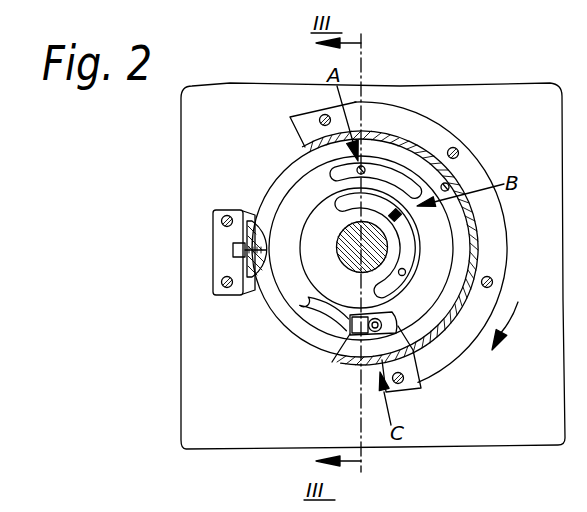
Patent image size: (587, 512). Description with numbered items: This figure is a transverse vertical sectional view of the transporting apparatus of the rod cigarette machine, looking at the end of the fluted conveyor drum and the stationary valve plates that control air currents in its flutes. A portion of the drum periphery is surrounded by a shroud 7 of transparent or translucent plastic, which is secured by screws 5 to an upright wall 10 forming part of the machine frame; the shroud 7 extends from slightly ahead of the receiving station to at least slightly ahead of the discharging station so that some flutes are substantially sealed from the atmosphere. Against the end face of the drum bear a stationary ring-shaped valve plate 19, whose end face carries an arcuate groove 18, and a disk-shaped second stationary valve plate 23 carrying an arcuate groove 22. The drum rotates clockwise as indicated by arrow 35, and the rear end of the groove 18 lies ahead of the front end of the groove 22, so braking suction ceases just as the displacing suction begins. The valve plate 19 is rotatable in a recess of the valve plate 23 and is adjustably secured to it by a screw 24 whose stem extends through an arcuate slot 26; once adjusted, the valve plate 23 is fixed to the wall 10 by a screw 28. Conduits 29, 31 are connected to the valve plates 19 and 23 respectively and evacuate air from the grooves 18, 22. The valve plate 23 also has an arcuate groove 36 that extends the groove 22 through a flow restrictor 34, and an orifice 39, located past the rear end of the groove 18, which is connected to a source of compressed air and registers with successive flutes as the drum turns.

The screws 5 is at (325, 120).
The shroud 7 is at (423, 140).
The upright wall 10 is at (227, 345).
The arcuate groove 18 is at (428, 178).
The ring-shaped valve plate 19 is at (297, 204).
The arcuate groove 22 is at (416, 246).
The disk-shaped second stationary valve plate 23 is at (333, 287).
The screw 24 is at (411, 384).
The arcuate slot 26 is at (357, 334).
The screw 28 is at (233, 250).
The conduit 29 is at (365, 169).
The conduit 31 is at (405, 270).
The flow restrictor 34 is at (406, 238).
The arrow 35 is at (513, 318).
The arcuate groove 36 is at (362, 203).
The orifice 39 is at (447, 189).